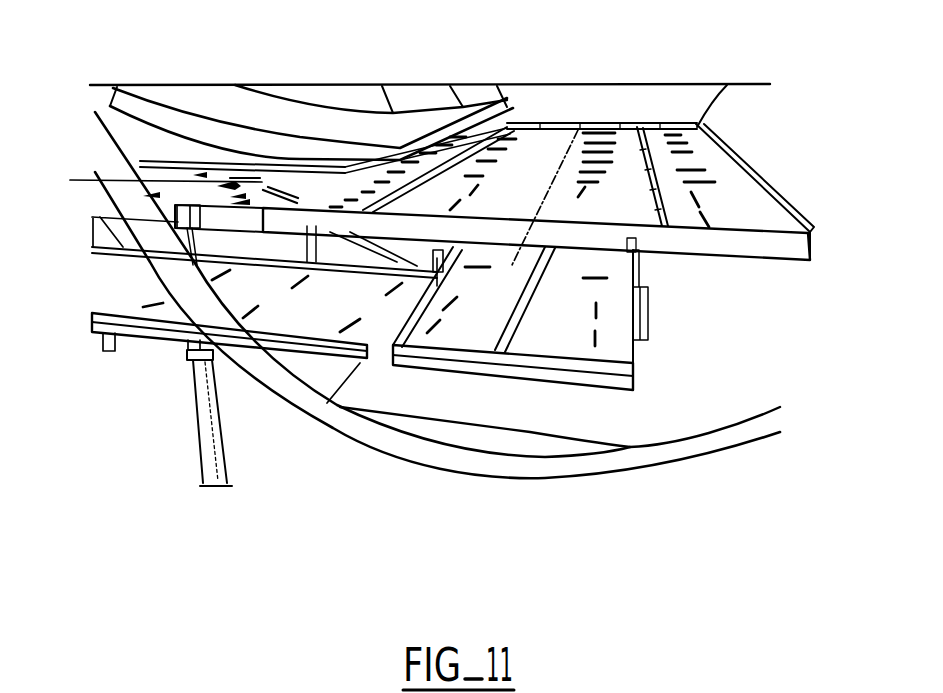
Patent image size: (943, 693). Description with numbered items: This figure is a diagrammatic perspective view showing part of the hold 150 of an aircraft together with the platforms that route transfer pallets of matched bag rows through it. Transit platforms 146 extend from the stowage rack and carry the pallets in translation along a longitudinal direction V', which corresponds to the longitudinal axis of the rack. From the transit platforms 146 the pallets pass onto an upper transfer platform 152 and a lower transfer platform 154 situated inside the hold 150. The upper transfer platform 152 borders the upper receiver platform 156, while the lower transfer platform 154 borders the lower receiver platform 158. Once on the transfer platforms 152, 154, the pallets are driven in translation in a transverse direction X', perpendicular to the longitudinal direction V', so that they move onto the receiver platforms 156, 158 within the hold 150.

The transit platforms 146 is at (125, 163).
The hold 150 is at (799, 363).
The upper transfer platform 152 is at (749, 243).
The lower transfer platform 154 is at (547, 343).
The upper receiver platform 156 is at (577, 150).
The lower receiver platform 158 is at (494, 339).